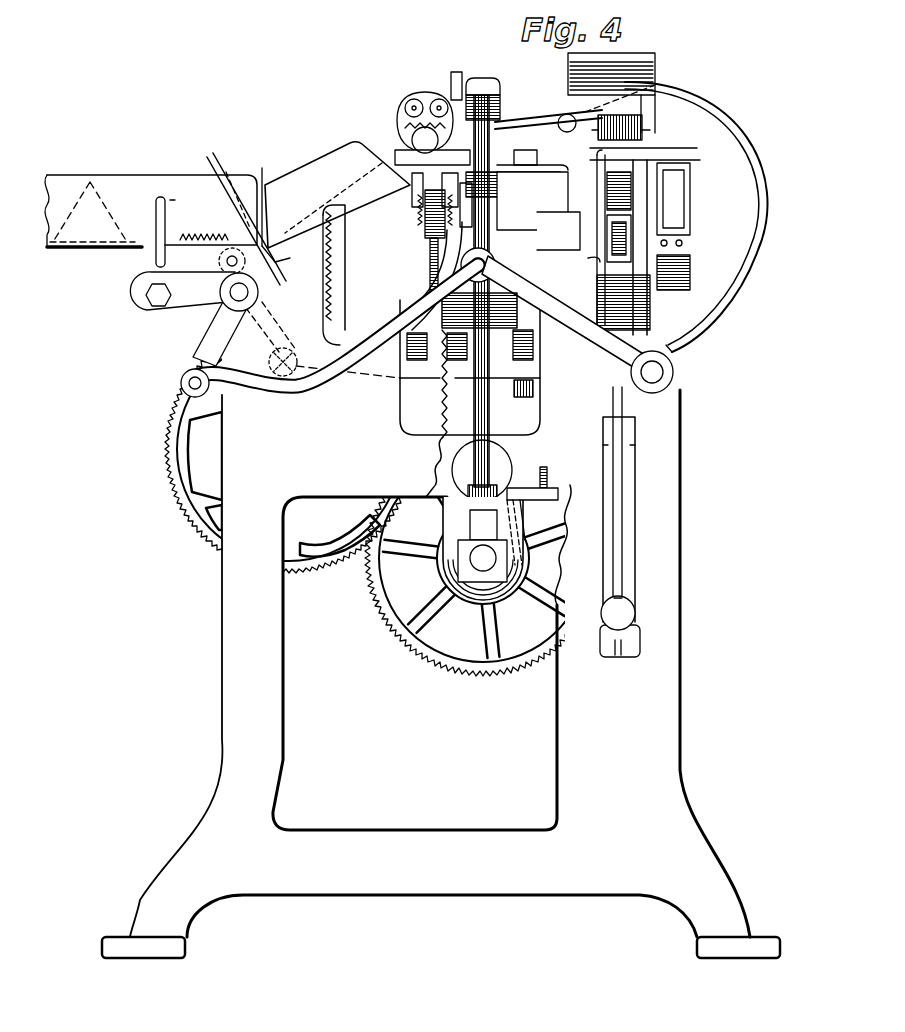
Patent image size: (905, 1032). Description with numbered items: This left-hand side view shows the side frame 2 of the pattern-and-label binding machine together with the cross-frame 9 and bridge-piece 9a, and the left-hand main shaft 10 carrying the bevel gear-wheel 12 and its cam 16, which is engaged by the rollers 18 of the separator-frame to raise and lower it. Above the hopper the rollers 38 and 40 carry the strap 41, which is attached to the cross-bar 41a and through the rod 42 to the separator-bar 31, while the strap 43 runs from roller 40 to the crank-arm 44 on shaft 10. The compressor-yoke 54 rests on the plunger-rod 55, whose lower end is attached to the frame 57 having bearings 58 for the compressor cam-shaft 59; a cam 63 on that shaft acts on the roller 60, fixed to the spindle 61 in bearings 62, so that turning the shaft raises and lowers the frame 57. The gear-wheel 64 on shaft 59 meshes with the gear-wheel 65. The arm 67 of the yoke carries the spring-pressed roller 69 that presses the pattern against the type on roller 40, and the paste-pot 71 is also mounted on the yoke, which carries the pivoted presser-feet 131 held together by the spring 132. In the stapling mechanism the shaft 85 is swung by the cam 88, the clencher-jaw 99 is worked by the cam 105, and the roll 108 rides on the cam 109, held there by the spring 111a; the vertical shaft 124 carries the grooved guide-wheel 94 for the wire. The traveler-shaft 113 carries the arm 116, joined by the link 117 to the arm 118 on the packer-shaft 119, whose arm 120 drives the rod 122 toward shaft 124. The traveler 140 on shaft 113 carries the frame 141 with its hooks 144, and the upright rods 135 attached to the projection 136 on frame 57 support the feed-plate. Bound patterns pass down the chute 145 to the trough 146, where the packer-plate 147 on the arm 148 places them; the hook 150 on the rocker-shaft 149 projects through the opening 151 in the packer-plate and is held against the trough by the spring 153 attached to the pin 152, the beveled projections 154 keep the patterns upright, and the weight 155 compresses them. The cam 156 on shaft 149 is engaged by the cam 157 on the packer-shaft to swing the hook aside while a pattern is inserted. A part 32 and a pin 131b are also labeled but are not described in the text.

The side frame 2 is at (441, 629).
The cross-frame 9 is at (564, 240).
The bridge-piece 9a is at (490, 262).
The left-hand main shaft 10 is at (508, 330).
The bevel gear-wheel 12 is at (342, 249).
The cam 16 is at (622, 302).
The roller 18 is at (598, 262).
The separator-bar 31 is at (620, 626).
The guide 32 is at (637, 517).
The roller 38 is at (592, 167).
The roller 40 is at (690, 192).
The strap 41 is at (580, 240).
The cross-bar 41a is at (682, 343).
The rod 42 is at (625, 403).
The strap 43 is at (688, 220).
The crank-arm 44 is at (682, 257).
The compressor-yoke 54 is at (453, 90).
The compressor plunger-rod 55 is at (490, 134).
The frame 57 is at (516, 542).
The bearing 58 is at (483, 572).
The compressor cam-shaft 59 is at (482, 546).
The roller 60 is at (509, 463).
The spindle 61 is at (468, 493).
The bearing 62 is at (522, 492).
The cam 63 is at (440, 555).
The gear-wheel 64 is at (497, 670).
The gear-wheel 65 is at (304, 572).
The arm 67 is at (500, 102).
The spring-pressed roller 69 is at (642, 128).
The paste-pot 71 is at (614, 66).
The shaft 85 is at (428, 225).
The cam 88 is at (533, 342).
The grooved guide-wheel 94 is at (527, 185).
The clencher-jaw 99 is at (420, 200).
The cam 105 is at (462, 346).
The roll 108 is at (430, 262).
The cam 109 is at (410, 336).
The spring 111a is at (445, 415).
The traveler-shaft 113 is at (663, 373).
The arm 116 is at (580, 340).
The link 117 is at (306, 386).
The arm 118 is at (206, 349).
The packer-shaft 119 is at (220, 322).
The arm 120 is at (276, 322).
The rod 122 is at (378, 386).
The vertical shaft 124 is at (522, 398).
The presser-feet 131 is at (410, 115).
The bolt head 131b is at (492, 84).
The spring 132 is at (405, 130).
The upright rod 135 is at (548, 488).
The projection 136 is at (518, 516).
The traveler 140 is at (770, 205).
The frame 141 is at (555, 122).
The hook 144 is at (597, 154).
The chute 145 is at (337, 195).
The hopper 146 is at (191, 192).
The packer-plate 147 is at (214, 158).
The arm 148 is at (285, 256).
The rocker-shaft 149 is at (226, 261).
The hook 150 is at (263, 185).
The opening 151 is at (263, 228).
The pin 152 is at (233, 246).
The spring 153 is at (206, 235).
The beveled projection 154 is at (239, 191).
The weight 155 is at (90, 208).
The cam 156 is at (222, 283).
The cam 157 is at (150, 303).